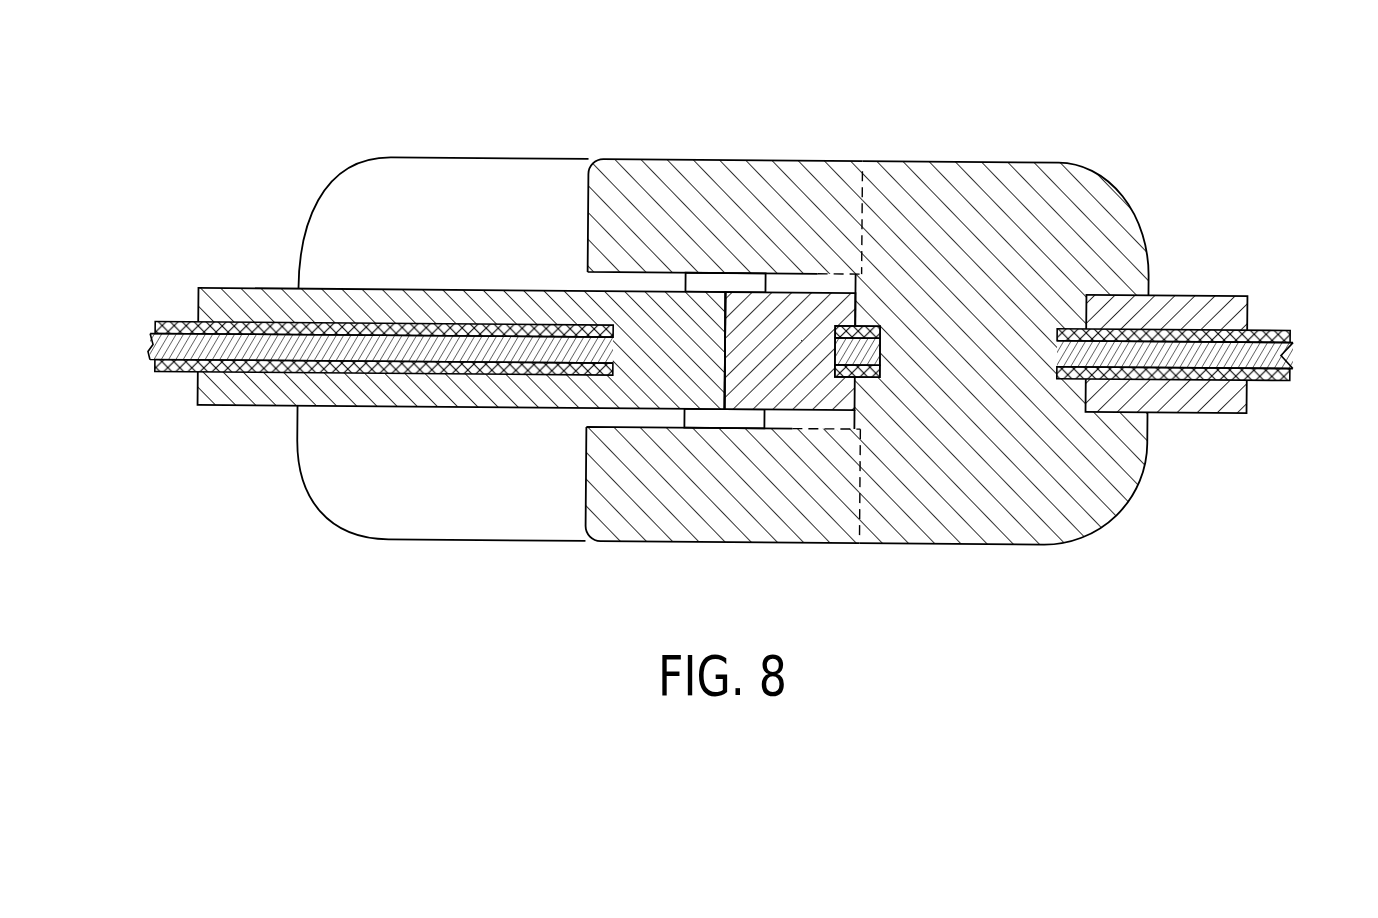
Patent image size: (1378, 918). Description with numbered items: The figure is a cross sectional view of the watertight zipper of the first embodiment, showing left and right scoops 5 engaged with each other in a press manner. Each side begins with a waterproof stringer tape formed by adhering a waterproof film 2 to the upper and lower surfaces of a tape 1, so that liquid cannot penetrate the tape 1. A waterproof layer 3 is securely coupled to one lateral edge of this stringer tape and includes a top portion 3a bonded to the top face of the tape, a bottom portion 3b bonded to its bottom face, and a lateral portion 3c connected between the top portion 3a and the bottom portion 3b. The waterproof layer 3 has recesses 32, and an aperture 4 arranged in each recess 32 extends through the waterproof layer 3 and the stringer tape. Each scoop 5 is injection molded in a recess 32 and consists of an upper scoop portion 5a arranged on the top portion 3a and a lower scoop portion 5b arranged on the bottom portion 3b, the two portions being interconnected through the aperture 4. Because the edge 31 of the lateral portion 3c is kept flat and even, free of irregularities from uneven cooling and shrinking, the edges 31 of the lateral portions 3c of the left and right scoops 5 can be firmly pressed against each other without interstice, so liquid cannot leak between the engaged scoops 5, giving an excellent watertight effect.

The tape 1 is at (160, 347).
The waterproof film 2 is at (176, 321).
The waterproof layer 3 is at (716, 361).
The top portion 3a is at (1195, 308).
The bottom portion 3b is at (1158, 396).
The lateral portion 3c is at (790, 365).
The edge of the lateral portion 31 is at (727, 337).
The recess 32 is at (888, 287).
The aperture 4 is at (882, 350).
The scoop 5 is at (360, 135).
The upper scoop portion 5a is at (598, 215).
The lower scoop portion 5b is at (595, 473).